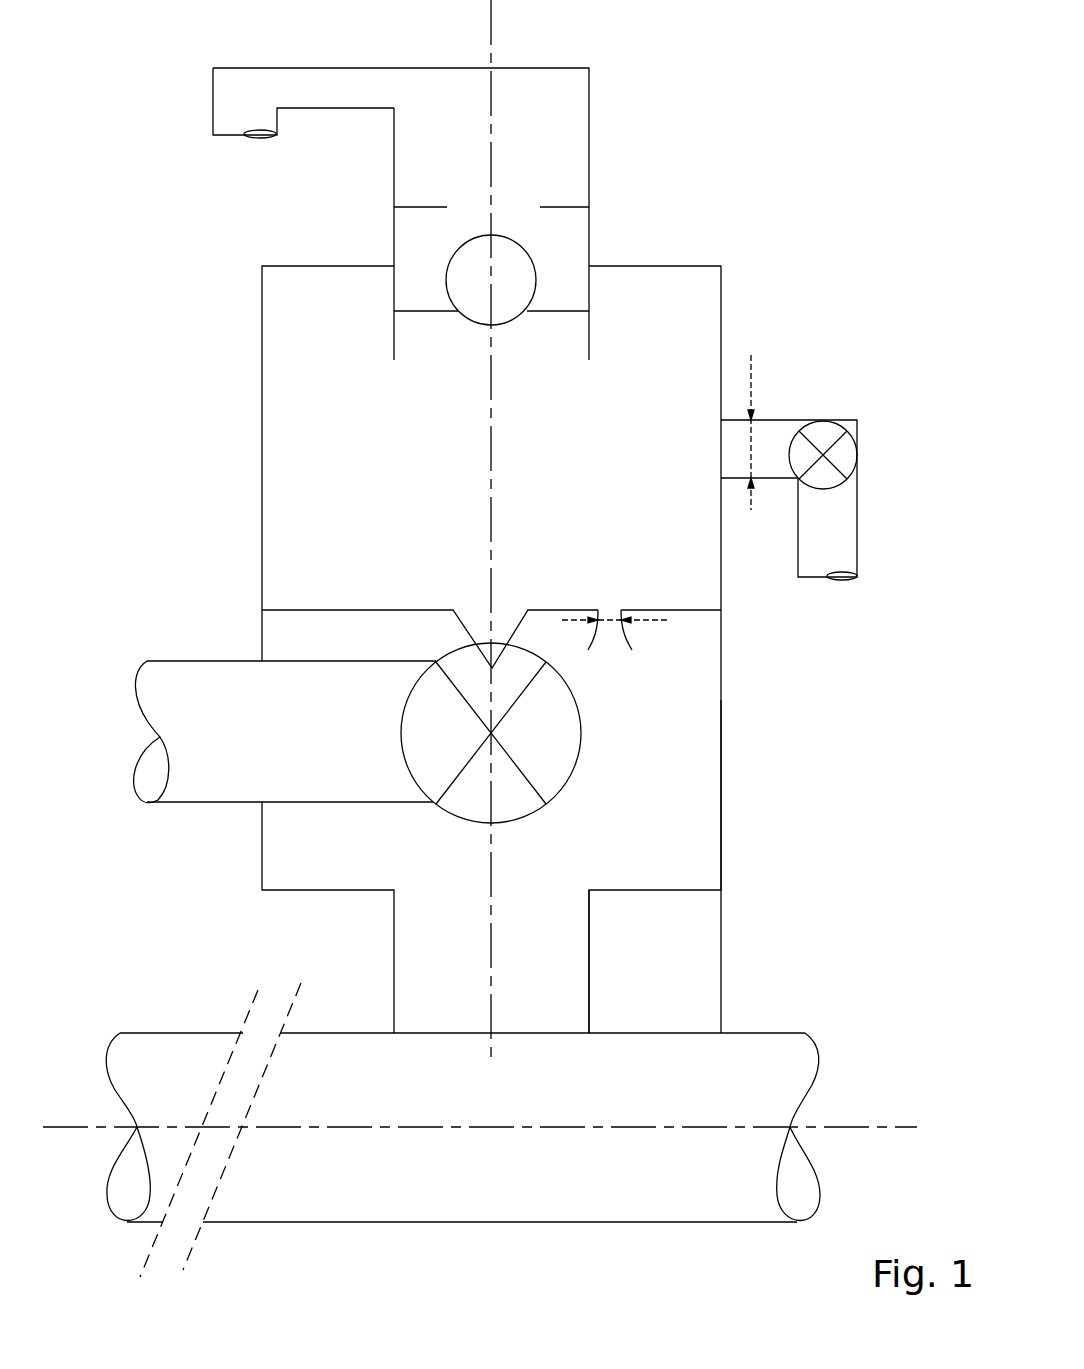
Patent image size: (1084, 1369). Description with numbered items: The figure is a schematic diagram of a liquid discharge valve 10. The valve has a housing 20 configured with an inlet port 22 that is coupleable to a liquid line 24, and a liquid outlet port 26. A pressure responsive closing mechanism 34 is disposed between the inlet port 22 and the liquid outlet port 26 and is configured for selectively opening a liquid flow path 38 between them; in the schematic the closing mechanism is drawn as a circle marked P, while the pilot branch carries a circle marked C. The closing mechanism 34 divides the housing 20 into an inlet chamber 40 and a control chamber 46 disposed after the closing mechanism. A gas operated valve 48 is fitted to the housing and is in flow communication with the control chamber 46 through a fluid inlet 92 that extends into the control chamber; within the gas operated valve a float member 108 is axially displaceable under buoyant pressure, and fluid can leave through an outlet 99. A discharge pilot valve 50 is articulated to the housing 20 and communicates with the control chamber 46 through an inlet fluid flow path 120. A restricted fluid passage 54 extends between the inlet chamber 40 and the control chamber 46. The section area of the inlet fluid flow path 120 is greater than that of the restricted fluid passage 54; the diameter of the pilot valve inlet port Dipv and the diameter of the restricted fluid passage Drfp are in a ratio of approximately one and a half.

The liquid discharge valve 10 is at (770, 113).
The housing 20 is at (262, 450).
The inlet port 22 is at (562, 952).
The liquid line 24 is at (737, 1060).
The liquid outlet port 26 is at (157, 768).
The pressure responsive closing mechanism 34 is at (643, 715).
The liquid flow path 38 is at (310, 753).
The inlet chamber 40 is at (690, 793).
The control chamber 46 is at (352, 552).
The gas operated valve 48 is at (613, 205).
The discharge pilot valve 50 is at (785, 517).
The restricted fluid passage 54 is at (610, 612).
The fluid inlet 92 is at (467, 328).
The outlet 99 is at (258, 138).
The float member 108 is at (522, 268).
The inlet fluid flow path 120 is at (767, 445).
The control valve C is at (847, 455).
The pump P is at (491, 733).
The diameter of the inlet port of the pilot valve Dipv is at (774, 423).
The diameter of the restricted fluid passage Drfp is at (624, 635).